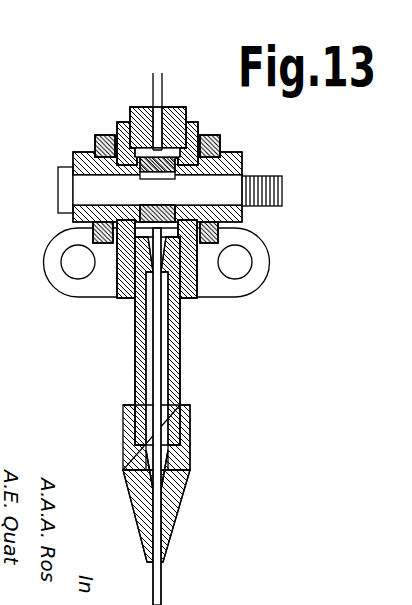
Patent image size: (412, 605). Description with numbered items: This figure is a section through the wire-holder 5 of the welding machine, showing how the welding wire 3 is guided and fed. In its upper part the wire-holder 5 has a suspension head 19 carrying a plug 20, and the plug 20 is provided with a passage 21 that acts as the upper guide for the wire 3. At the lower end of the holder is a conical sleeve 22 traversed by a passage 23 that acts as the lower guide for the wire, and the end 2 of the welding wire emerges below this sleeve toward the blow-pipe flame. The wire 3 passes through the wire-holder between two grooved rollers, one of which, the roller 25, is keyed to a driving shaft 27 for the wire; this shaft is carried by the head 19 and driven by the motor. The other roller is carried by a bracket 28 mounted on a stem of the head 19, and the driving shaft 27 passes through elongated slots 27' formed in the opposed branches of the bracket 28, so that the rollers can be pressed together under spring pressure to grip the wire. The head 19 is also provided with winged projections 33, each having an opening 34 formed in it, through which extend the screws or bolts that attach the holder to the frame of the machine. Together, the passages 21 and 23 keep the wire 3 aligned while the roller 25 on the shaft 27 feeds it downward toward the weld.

The end of the welding wire 2 is at (161, 603).
The welding wire 3 is at (163, 80).
The wire-holder 5 is at (180, 342).
The suspension head 19 is at (127, 130).
The plug 20 is at (143, 110).
The passage 21 is at (187, 117).
The conical sleeve 22 is at (183, 430).
The passage 23 is at (160, 523).
The grooved roller 25 is at (167, 160).
The driving shaft 27 is at (181, 171).
The elongated slots 27' is at (158, 168).
The bracket 28 is at (103, 147).
The winged projections 33 is at (253, 278).
The opening 34 is at (245, 250).